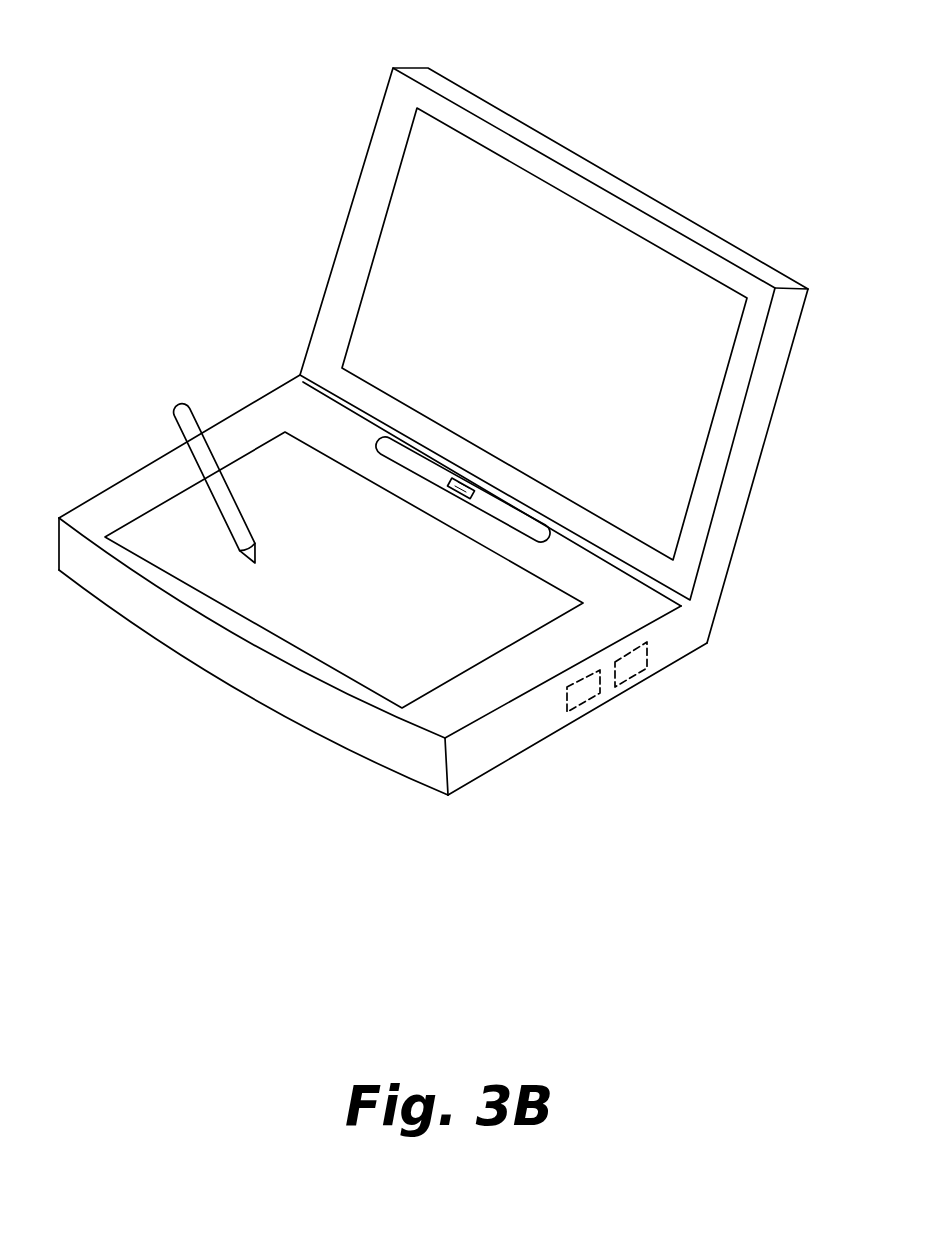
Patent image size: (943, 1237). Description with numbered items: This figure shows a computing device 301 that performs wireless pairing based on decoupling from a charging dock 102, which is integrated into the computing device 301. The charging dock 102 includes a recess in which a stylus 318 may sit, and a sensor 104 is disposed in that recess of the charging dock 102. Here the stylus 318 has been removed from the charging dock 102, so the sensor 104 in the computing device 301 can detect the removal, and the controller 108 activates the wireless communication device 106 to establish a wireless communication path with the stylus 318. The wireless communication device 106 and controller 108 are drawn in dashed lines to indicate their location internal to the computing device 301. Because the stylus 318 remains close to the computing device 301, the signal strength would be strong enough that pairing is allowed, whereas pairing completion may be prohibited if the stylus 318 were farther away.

The charging dock 102 is at (300, 377).
The sensor 104 is at (667, 597).
The wireless communication device 106 is at (588, 695).
The controller 108 is at (642, 665).
The computing device 301 is at (428, 82).
The stylus 318 is at (185, 428).